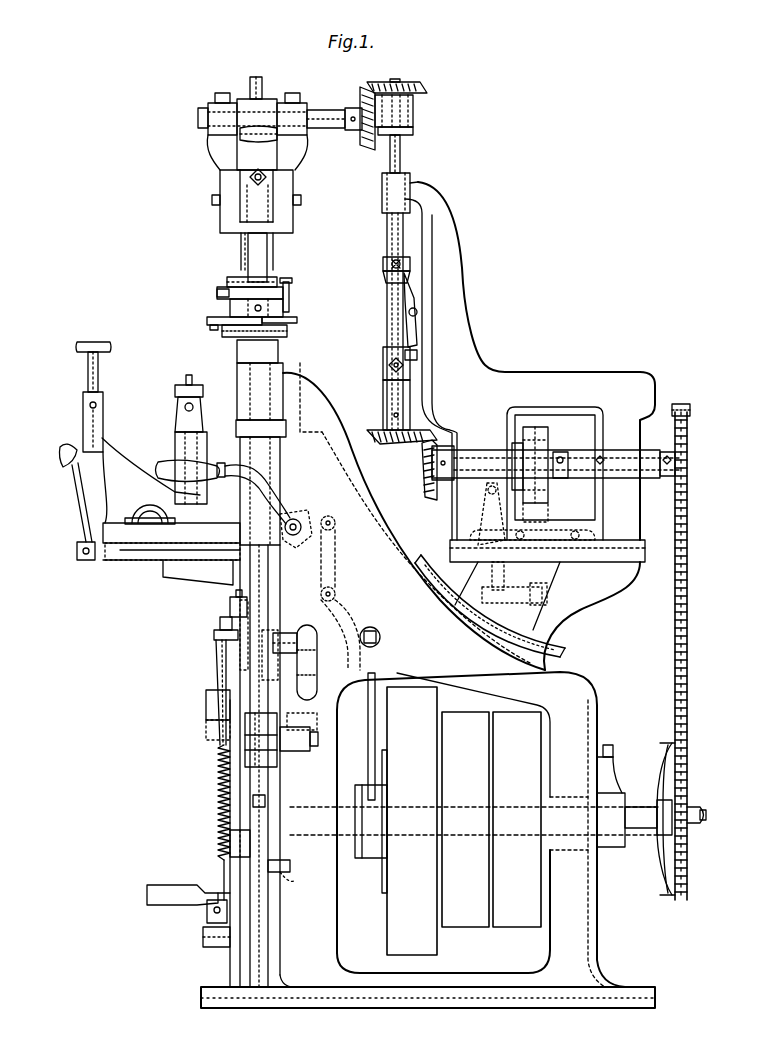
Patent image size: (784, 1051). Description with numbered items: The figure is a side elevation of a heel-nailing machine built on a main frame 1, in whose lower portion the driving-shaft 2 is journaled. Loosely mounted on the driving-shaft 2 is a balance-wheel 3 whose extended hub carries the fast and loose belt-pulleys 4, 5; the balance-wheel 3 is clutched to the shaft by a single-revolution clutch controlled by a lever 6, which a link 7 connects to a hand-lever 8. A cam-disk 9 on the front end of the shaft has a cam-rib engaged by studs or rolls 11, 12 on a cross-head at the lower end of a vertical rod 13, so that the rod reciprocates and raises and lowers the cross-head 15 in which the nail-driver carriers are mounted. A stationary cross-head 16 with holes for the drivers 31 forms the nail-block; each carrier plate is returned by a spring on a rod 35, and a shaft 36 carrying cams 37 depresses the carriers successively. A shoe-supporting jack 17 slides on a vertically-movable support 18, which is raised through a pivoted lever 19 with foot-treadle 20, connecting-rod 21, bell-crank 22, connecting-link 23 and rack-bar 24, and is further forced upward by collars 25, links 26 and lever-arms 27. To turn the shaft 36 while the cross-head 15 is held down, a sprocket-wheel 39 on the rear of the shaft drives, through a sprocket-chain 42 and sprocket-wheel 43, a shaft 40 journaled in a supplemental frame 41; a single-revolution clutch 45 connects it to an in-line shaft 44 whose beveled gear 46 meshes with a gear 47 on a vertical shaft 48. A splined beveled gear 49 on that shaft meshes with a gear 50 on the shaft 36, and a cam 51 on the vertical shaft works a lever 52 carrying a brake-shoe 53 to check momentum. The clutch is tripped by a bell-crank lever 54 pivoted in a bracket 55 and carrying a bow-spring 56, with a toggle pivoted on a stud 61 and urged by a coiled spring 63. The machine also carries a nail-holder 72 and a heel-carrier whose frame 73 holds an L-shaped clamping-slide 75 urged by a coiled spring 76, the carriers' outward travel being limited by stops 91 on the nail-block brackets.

The main frame 1 is at (318, 968).
The driving-shaft 2 is at (640, 830).
The balance-wheel 3 is at (387, 938).
The fast belt-pulley 4 is at (473, 927).
The loose belt-pulley 5 is at (517, 927).
The lever 6 is at (380, 690).
The link 7 is at (333, 558).
The hand-lever 8 is at (294, 518).
The cam-disk 9 is at (253, 800).
The stud or roll 11 is at (283, 866).
The stud or roll 12 is at (258, 846).
The vertical rod 13 is at (268, 248).
The cross-head 15 is at (220, 217).
The stationary cross-head 16 is at (228, 300).
The shoe-supporting jack 17 is at (112, 436).
The vertically-movable support 18 is at (188, 578).
The pivoted lever 19 is at (207, 908).
The foot-treadle 20 is at (160, 888).
The connecting-rod 21 is at (218, 768).
The bell-crank 22 is at (216, 700).
The connecting-link 23 is at (220, 626).
The reciprocating rack-bar 24 is at (230, 607).
The collar 25 is at (284, 760).
The link 26 is at (310, 700).
The lever-arm 27 is at (312, 660).
The driver 31 is at (240, 247).
The rod 35 is at (282, 136).
The shaft 36 is at (322, 110).
The cam 37 is at (257, 84).
The sprocket-wheel 39 is at (670, 748).
The shaft 40 is at (608, 450).
The supplemental frame 41 is at (492, 374).
The sprocket-chain 42 is at (688, 600).
The sprocket-wheel 43 is at (688, 414).
The shaft 44 is at (472, 457).
The single-revolution clutch 45 is at (550, 445).
The beveled gear 46 is at (425, 493).
The beveled gear 47 is at (392, 441).
The vertical shaft 48 is at (387, 300).
The beveled gear 49 is at (418, 98).
The beveled gear 50 is at (390, 145).
The cam 51 is at (383, 270).
The lever 52 is at (405, 300).
The brake-shoe 53 is at (412, 356).
The bell-crank lever 54 is at (504, 576).
The bracket 55 is at (480, 505).
The bow-spring 56 is at (535, 520).
The stud 61 is at (482, 598).
The coiled spring 63 is at (546, 596).
The nail-holder 72 is at (230, 280).
The frame 73 is at (290, 319).
The L-shaped clamping-slide 75 is at (215, 318).
The coiled spring 76 is at (284, 334).
The stop 91 is at (289, 308).